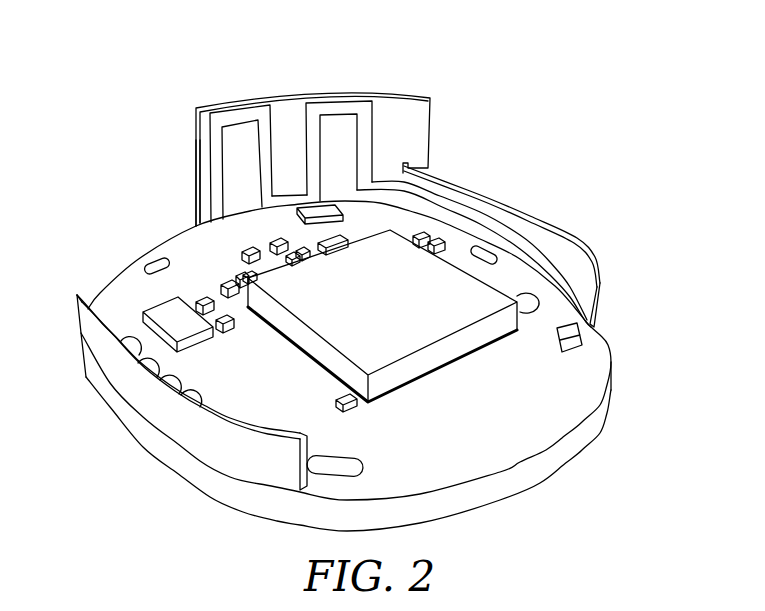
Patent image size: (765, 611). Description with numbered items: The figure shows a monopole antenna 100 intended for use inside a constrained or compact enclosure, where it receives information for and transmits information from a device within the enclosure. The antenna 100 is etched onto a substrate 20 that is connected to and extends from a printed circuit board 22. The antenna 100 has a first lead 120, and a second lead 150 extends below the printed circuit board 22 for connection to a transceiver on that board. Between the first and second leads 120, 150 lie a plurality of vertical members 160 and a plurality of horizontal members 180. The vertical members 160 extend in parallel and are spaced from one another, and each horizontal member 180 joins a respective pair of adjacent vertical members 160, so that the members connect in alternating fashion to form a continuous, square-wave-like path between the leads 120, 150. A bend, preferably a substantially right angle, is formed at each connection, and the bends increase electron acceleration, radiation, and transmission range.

The substrate 20 is at (402, 122).
The printed circuit board 22 is at (563, 370).
The monopole antenna 100 is at (444, 150).
The first lead 120 is at (518, 238).
The second lead 150 is at (213, 183).
The vertical members 160 is at (312, 128).
The horizontal members 180 is at (233, 110).